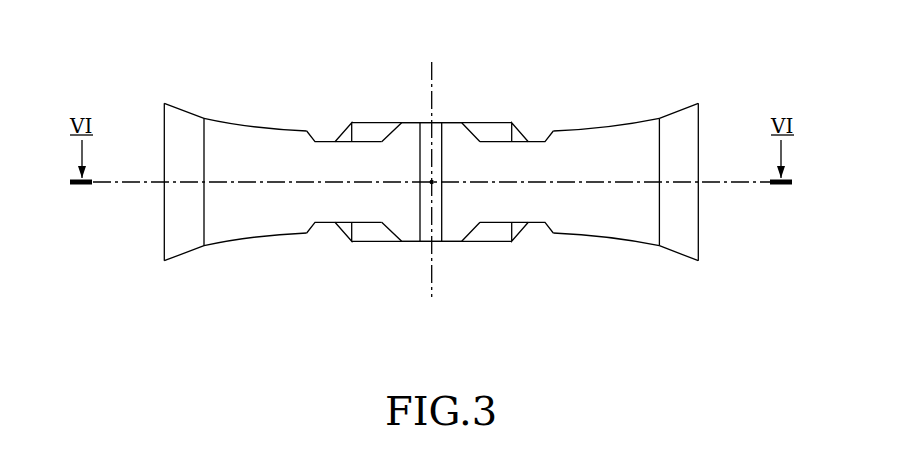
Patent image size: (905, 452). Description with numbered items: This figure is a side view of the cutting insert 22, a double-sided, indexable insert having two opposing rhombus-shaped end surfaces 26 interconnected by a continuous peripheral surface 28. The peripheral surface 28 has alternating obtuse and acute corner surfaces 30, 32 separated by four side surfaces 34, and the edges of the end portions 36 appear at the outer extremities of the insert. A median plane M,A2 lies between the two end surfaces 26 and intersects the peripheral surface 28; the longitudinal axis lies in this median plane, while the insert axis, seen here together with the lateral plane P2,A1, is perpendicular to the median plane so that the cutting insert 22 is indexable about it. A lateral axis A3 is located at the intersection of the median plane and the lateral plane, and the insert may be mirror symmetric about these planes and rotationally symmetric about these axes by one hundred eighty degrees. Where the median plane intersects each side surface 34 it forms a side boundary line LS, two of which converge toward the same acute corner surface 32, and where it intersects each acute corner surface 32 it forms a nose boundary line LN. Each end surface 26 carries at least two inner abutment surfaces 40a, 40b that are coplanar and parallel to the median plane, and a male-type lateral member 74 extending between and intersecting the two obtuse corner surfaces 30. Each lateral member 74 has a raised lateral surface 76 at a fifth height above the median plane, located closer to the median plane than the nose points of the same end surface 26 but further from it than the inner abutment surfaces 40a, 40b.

The cutting insert 22 is at (377, 104).
The end surface 26 is at (240, 121).
The peripheral surface 28 is at (594, 155).
The obtuse corner surface 30 is at (437, 188).
The acute corner surface 32 is at (182, 143).
The side surface 34 is at (238, 213).
The chamfered edge 36 is at (183, 107).
The inner abutment surface 40a is at (352, 122).
The inner abutment surface 40b is at (552, 131).
The lateral member 74 is at (512, 122).
The raised lateral surface 76 is at (469, 129).
The lateral axis A3 is at (431, 181).
The lateral plane and insert axis P2,A1 is at (435, 167).
The median plane and longitudinal axis M,A2 is at (472, 184).
The nose boundary line LN is at (677, 183).
The side boundary line LS is at (268, 183).